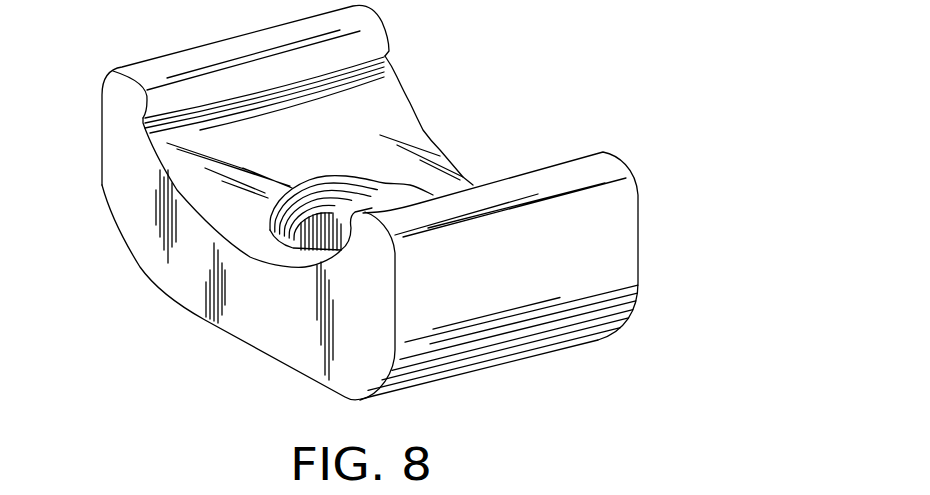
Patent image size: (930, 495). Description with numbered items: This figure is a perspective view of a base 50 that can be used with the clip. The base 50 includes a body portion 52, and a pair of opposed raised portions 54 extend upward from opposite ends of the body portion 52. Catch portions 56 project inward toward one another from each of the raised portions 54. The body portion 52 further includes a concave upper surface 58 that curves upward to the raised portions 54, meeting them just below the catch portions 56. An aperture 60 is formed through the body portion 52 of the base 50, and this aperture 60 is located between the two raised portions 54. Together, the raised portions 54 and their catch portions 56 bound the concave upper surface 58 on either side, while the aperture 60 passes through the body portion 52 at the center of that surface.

The base 50 is at (793, 200).
The body portion 52 is at (212, 324).
The raised portions 54 is at (712, 193).
The catch portions 56 is at (248, 411).
The concave upper surface 58 is at (392, 160).
The aperture 60 is at (356, 196).